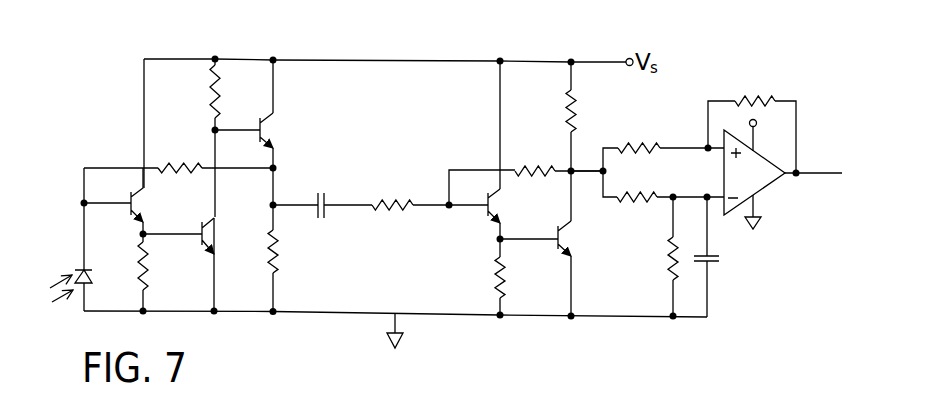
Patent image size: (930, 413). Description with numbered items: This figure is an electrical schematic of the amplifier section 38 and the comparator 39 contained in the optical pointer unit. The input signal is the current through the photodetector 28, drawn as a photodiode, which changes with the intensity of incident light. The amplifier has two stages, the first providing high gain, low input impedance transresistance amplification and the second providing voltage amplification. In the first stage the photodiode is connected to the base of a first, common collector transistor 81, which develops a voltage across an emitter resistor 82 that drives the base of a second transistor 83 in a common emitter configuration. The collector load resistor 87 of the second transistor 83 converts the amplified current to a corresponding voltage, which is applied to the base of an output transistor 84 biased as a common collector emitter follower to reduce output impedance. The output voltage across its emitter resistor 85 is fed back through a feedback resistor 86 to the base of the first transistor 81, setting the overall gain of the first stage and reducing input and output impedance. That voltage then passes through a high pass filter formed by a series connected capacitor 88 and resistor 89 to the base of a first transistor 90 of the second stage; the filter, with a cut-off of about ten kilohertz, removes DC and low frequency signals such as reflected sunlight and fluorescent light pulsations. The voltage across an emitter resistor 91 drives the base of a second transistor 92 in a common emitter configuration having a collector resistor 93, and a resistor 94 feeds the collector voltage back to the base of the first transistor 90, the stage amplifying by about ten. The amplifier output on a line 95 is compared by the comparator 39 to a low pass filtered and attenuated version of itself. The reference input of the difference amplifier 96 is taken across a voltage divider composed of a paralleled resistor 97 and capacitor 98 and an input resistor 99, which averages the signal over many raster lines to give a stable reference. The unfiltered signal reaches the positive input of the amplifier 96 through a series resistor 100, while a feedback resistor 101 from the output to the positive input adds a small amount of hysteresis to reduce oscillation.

The photodetector 28 is at (87, 267).
The amplifier section 38 is at (538, 55).
The comparator 39 is at (784, 95).
The first transistor 81 is at (138, 206).
The emitter resistor 82 is at (146, 283).
The second transistor 83 is at (210, 243).
The output transistor 84 is at (262, 132).
The emitter resistor 85 is at (277, 268).
The feedback resistor 86 is at (168, 163).
The collector load resistor 87 is at (217, 110).
The capacitor 88 is at (326, 199).
The resistor 89 is at (383, 199).
The first transistor 90 is at (493, 212).
The emitter resistor 91 is at (504, 285).
The second transistor 92 is at (565, 243).
The collector resistor 93 is at (576, 125).
The resistor 94 is at (521, 167).
The line 95 is at (580, 168).
The difference amplifier 96 is at (763, 190).
The resistor 97 is at (663, 247).
The capacitor 98 is at (713, 265).
The input resistor 99 is at (652, 205).
The series resistor 100 is at (626, 142).
The feedback resistor 101 is at (738, 97).